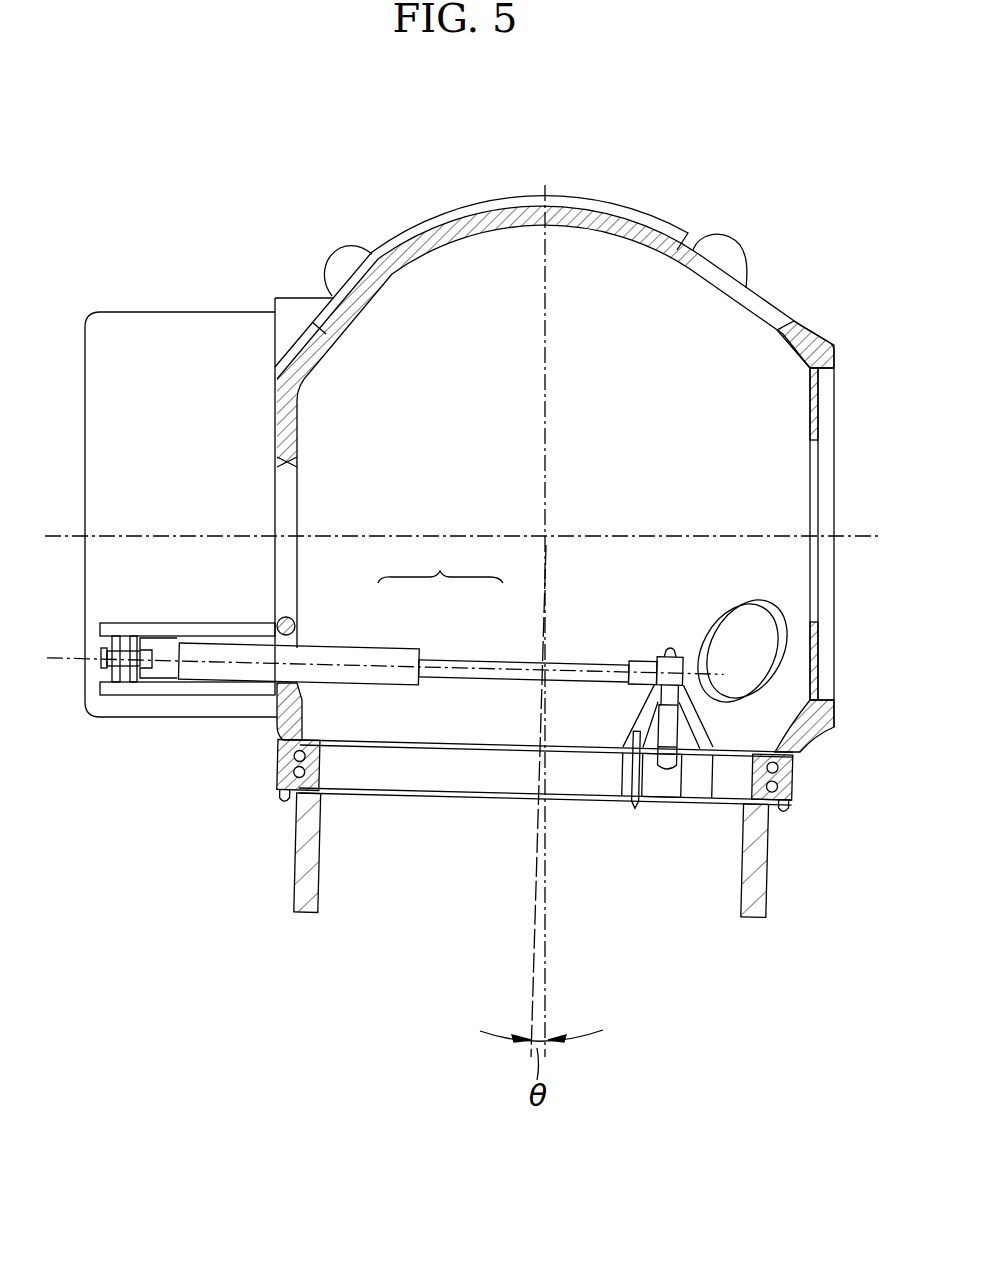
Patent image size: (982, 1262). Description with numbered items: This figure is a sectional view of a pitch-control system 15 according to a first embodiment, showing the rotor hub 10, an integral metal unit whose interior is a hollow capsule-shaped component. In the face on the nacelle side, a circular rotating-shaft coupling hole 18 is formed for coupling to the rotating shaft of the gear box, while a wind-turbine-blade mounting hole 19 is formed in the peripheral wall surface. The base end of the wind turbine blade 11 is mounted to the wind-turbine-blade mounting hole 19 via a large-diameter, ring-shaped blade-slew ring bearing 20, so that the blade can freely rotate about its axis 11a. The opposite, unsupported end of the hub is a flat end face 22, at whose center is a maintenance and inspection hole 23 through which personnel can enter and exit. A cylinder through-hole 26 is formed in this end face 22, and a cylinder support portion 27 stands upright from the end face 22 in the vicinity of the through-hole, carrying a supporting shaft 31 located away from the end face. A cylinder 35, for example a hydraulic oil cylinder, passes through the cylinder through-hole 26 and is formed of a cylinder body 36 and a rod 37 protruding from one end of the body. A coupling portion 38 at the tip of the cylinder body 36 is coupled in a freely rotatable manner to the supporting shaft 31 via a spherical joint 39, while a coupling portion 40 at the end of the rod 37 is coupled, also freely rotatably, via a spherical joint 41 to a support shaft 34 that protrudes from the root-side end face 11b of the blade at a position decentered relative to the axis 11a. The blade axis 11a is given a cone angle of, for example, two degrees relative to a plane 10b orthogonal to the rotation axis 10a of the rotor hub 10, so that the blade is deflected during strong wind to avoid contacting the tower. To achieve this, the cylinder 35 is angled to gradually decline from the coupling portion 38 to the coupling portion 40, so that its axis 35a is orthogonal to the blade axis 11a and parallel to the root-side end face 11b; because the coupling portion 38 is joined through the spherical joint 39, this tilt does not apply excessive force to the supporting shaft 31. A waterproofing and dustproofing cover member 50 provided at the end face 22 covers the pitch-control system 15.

The rotor hub 10 is at (505, 194).
The rotation axis 10a is at (652, 532).
The plane 10b is at (556, 363).
The wind turbine blade 11 is at (297, 880).
The axis 11a is at (532, 980).
The root-side end face 11b is at (480, 742).
The pitch-control system 15 is at (236, 604).
The rotating-shaft coupling hole 18 is at (832, 492).
The wind-turbine-blade mounting hole 19 is at (302, 730).
The blade-slew ring bearing 20 is at (326, 780).
The end face 22 is at (275, 392).
The maintenance and inspection hole 23 is at (296, 462).
The cylinder through-hole 26 is at (300, 640).
The cylinder support portion 27 is at (160, 624).
The supporting shaft 31 is at (112, 672).
The support shaft 34 is at (660, 728).
The cylinder 35 is at (440, 562).
The axis 35a is at (570, 666).
The cylinder body 36 is at (380, 645).
The rod 37 is at (490, 658).
The coupling portion 38 is at (103, 650).
The spherical joint 39 is at (118, 690).
The coupling portion 40 is at (652, 658).
The spherical joint 41 is at (682, 660).
The cover member 50 is at (144, 311).